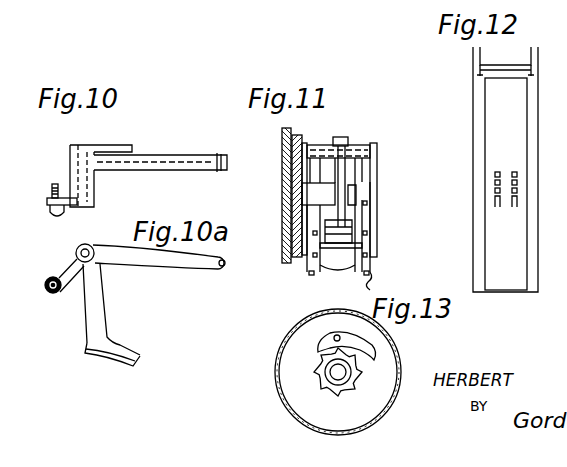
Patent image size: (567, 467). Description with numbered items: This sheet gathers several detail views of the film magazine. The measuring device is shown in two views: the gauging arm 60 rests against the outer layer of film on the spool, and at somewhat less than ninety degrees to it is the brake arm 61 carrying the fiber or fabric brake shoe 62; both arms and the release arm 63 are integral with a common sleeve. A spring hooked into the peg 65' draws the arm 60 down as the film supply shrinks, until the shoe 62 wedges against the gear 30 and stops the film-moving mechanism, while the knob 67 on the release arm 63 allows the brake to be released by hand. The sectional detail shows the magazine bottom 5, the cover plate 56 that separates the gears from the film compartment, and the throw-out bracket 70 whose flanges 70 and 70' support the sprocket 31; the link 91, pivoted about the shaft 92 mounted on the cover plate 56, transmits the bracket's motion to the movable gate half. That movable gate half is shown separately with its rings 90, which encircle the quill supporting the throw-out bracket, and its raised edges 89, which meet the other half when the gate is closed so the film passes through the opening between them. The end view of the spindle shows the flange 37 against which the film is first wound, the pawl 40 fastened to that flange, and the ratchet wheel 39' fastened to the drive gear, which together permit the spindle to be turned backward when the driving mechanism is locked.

In FIG. 10, the arm 60 is at (157, 166).
In FIG. 10A, the arm 60 is at (173, 256).
In FIG. 10, the release arm 63 is at (71, 204).
In FIG. 10A, the release arm 63 is at (72, 263).
In FIG. 10, the peg 65' is at (43, 183).
In FIG. 10, the knob 67 is at (49, 209).
In FIG. 10A, the brake arm 61 is at (93, 317).
In FIG. 10A, the brake shoe 62 is at (105, 355).
In FIG. 11, the bottom 5 is at (282, 246).
In FIG. 11, the gear 30 is at (291, 222).
In FIG. 11, the shaft 92 is at (301, 200).
In FIG. 11, the flange 70' is at (306, 164).
In FIG. 11, the cover plate 56 is at (301, 185).
In FIG. 11, the link 91 is at (350, 192).
In FIG. 11, the bracket 70 is at (358, 209).
In FIG. 11, the sprocket 31 is at (362, 285).
In FIG. 12, the raised edges 89 is at (481, 111).
In FIG. 12, the rings 90 is at (474, 58).
In FIG. 13, the flange 37 is at (293, 355).
In FIG. 13, the ratchet wheel 39' is at (304, 372).
In FIG. 13, the pawl 40 is at (322, 343).